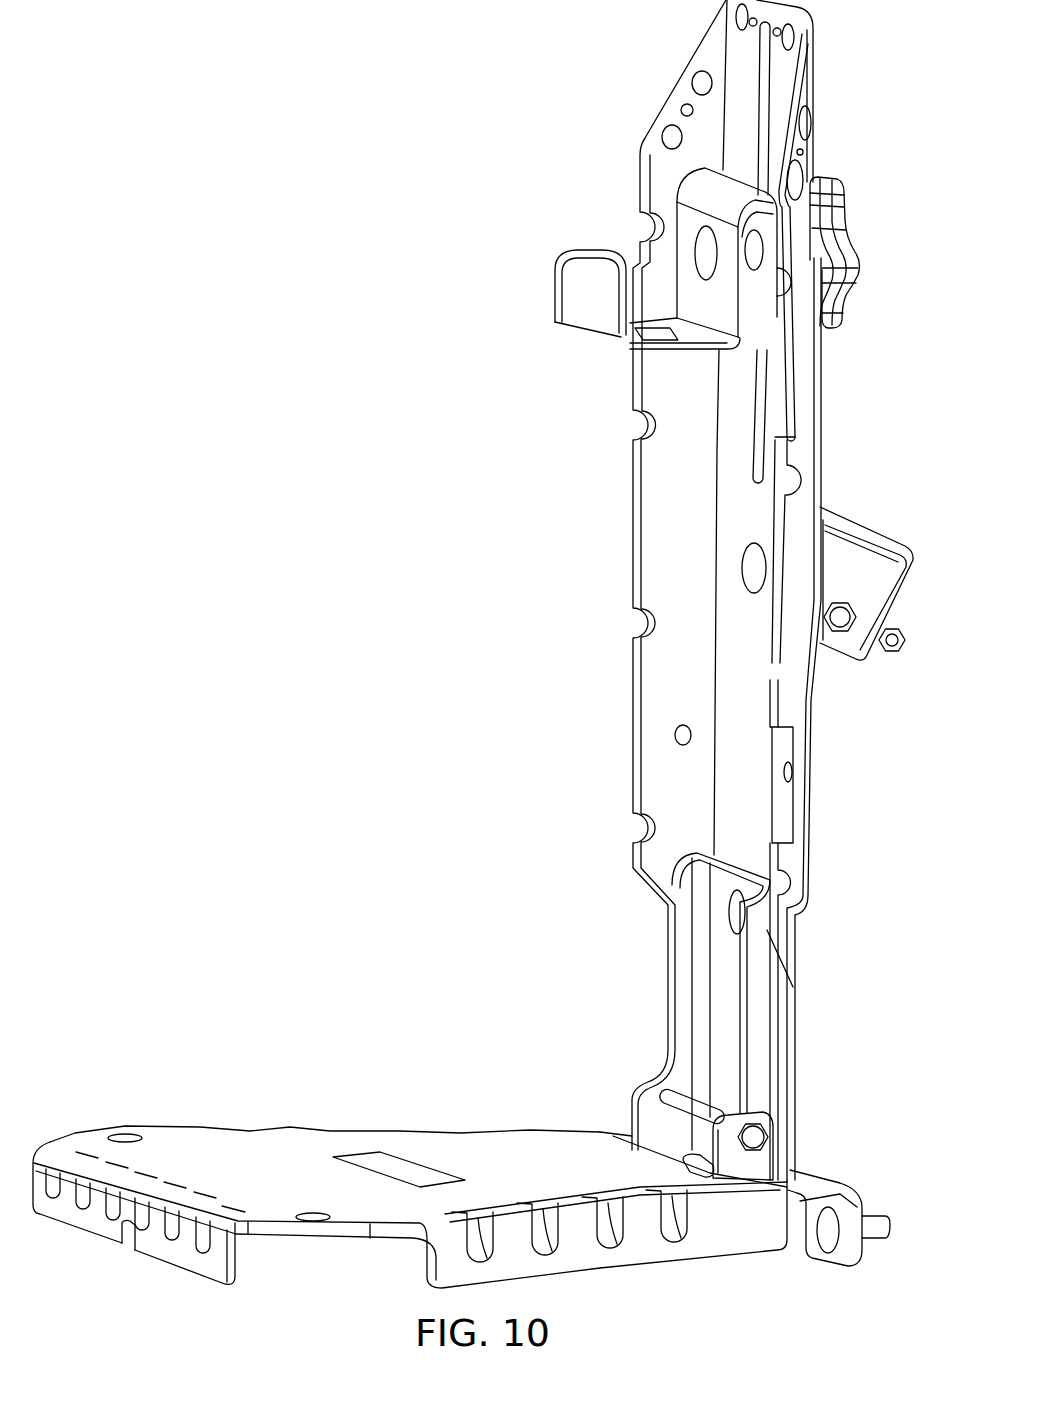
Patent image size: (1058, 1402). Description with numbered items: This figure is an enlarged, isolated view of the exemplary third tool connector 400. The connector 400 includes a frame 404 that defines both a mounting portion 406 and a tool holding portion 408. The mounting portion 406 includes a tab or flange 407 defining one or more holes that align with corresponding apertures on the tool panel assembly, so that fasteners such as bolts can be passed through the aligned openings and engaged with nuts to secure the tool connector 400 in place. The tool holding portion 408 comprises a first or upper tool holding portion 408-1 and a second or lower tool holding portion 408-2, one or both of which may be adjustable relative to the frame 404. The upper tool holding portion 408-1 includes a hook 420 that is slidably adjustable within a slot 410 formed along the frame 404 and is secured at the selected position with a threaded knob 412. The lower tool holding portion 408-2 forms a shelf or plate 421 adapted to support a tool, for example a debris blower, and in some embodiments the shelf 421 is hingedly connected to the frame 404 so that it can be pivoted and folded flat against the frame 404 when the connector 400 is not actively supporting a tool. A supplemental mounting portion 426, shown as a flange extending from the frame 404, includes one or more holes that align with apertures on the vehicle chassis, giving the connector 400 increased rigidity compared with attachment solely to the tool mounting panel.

The tool connector 400 is at (638, 158).
The frame 404 is at (632, 455).
The mounting portion 406 is at (845, 518).
The tab or flange 407 is at (845, 662).
The tool holding portion 408 is at (431, 346).
The first or upper tool holding portion 408-1 is at (557, 328).
The second or lower tool holding portion 408-2 is at (369, 1060).
The slot 410 is at (765, 80).
The threaded knob 412 is at (838, 180).
The hook 420 is at (553, 272).
The shelf or plate 421 is at (190, 1145).
The supplemental mounting portion 426 is at (818, 1183).